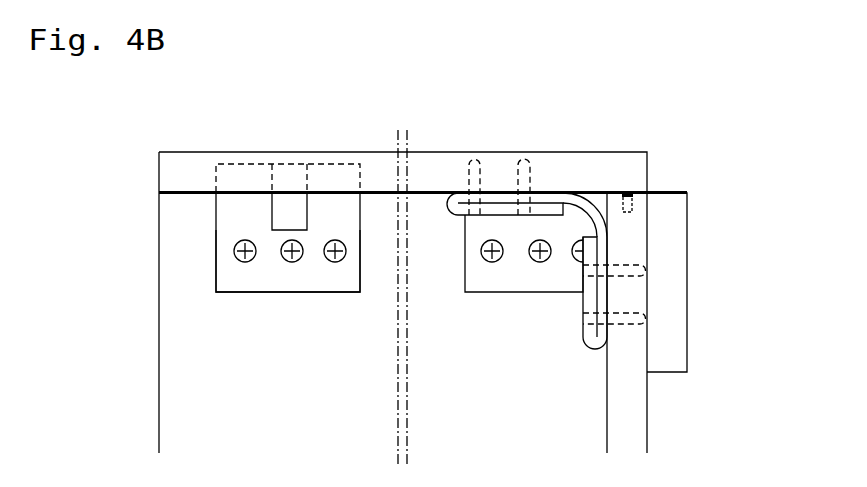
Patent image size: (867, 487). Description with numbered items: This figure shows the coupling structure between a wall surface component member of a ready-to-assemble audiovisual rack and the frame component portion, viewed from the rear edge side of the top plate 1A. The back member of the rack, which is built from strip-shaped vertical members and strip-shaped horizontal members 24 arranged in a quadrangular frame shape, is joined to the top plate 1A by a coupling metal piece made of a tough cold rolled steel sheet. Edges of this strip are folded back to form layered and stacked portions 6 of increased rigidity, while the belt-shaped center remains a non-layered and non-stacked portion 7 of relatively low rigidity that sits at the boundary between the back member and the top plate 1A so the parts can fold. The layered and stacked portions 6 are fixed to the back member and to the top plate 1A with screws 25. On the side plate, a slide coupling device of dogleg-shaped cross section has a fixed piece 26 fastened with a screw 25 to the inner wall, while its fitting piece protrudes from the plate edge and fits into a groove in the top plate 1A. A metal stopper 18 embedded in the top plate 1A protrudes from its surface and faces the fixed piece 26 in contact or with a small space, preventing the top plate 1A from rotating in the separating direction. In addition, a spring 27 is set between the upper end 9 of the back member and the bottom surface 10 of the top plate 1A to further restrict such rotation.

The top plate 1A is at (577, 163).
The bottom surface of the top plate 10 is at (176, 194).
The stopper 18 is at (297, 212).
The fixed piece 26 is at (223, 238).
The layered and stacked portion 6 is at (508, 198).
The non-layered and non-stacked portion 7 is at (602, 226).
The upper end of the back member 9 is at (637, 192).
The spring 27 is at (637, 202).
The horizontal member 24 is at (679, 348).
The screw 25 is at (470, 152).